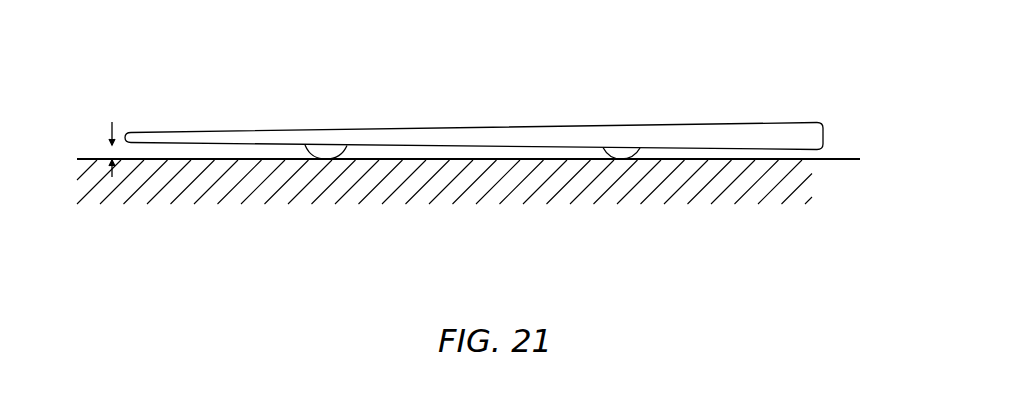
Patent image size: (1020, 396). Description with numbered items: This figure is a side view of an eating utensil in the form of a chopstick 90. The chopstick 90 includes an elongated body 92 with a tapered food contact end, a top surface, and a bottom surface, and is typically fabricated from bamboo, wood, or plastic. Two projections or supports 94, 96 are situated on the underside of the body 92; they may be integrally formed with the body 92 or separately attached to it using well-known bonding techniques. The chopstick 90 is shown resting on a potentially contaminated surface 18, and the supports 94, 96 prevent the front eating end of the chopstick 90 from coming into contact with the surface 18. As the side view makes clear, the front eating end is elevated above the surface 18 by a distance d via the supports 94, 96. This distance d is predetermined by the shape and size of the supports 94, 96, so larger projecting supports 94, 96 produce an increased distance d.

The surface 18 is at (837, 159).
The chopstick 90 is at (262, 66).
The elongated body 92 is at (227, 131).
The support 94 is at (328, 152).
The support 96 is at (623, 152).
The distance d is at (107, 150).